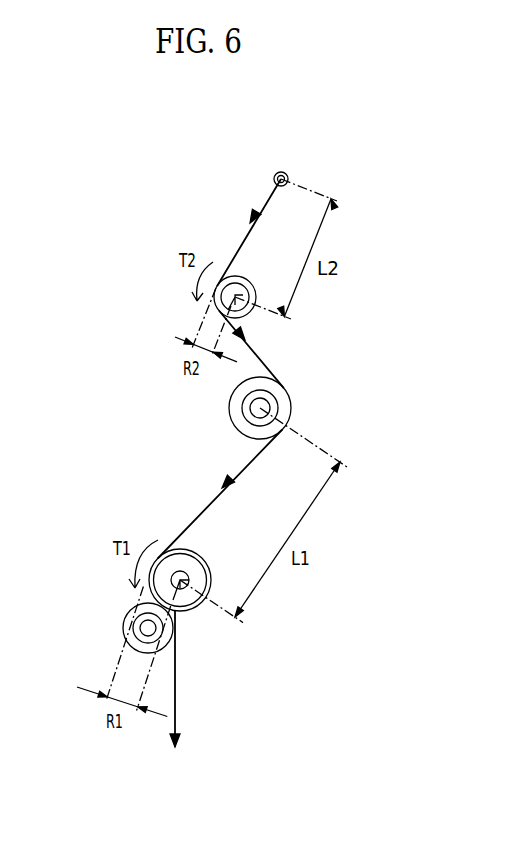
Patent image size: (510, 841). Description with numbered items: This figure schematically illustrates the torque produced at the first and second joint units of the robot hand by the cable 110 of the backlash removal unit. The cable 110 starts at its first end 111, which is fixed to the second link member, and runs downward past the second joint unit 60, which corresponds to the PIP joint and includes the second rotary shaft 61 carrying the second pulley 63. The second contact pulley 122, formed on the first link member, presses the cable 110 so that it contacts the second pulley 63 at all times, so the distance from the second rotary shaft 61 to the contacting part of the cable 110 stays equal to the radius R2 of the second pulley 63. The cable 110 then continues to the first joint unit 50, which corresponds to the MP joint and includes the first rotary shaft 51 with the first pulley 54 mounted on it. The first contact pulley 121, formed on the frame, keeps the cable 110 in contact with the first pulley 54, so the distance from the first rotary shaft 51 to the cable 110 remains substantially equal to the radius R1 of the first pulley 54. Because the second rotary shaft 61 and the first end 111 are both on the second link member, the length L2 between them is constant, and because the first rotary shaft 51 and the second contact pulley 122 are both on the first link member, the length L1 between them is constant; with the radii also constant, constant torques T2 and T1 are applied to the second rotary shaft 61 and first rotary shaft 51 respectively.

The first joint unit 50 is at (202, 593).
The first rotary shaft 51 is at (188, 578).
The first pulley 54 is at (190, 565).
The second joint unit 60 is at (261, 308).
The second rotary shaft 61 is at (243, 291).
The second pulley 63 is at (236, 276).
The cable 110 is at (258, 207).
The first end 111 is at (285, 172).
The first contact pulley 121 is at (125, 618).
The second contact pulley 122 is at (230, 408).